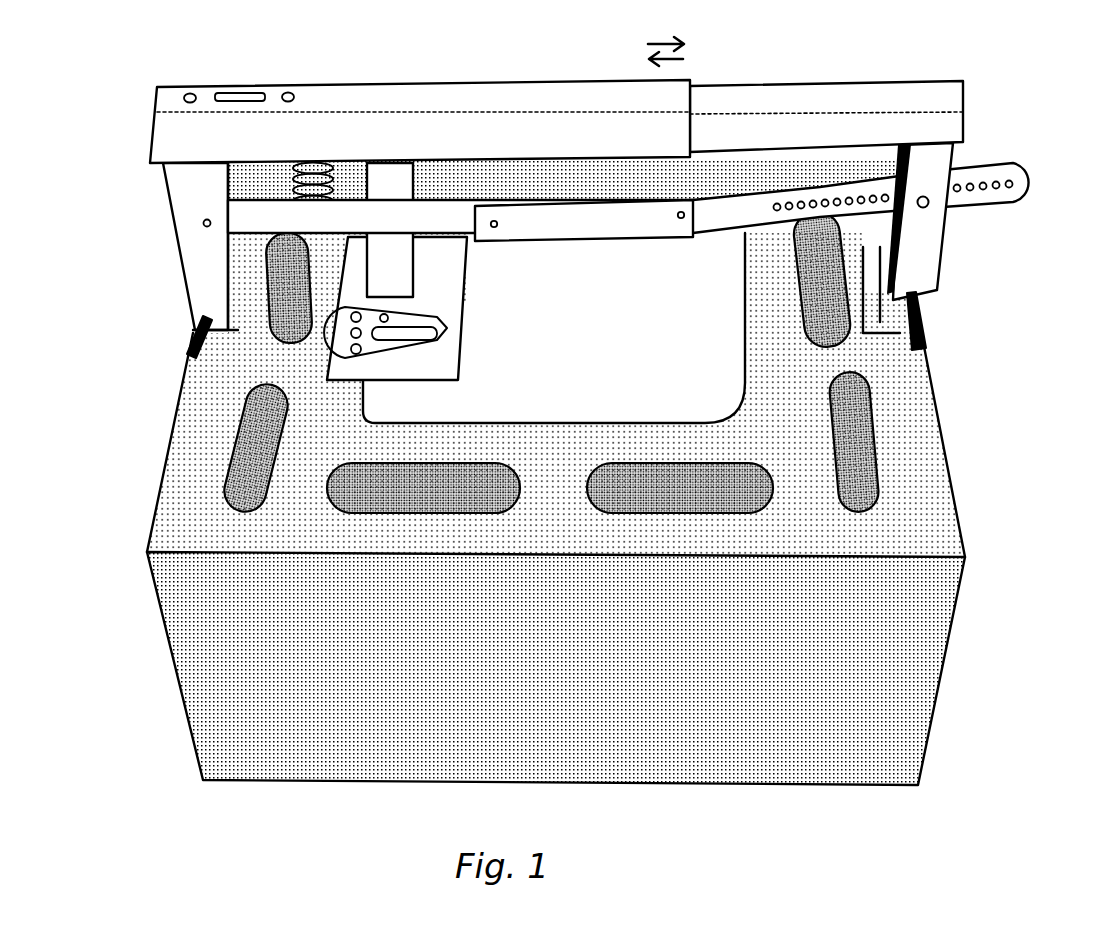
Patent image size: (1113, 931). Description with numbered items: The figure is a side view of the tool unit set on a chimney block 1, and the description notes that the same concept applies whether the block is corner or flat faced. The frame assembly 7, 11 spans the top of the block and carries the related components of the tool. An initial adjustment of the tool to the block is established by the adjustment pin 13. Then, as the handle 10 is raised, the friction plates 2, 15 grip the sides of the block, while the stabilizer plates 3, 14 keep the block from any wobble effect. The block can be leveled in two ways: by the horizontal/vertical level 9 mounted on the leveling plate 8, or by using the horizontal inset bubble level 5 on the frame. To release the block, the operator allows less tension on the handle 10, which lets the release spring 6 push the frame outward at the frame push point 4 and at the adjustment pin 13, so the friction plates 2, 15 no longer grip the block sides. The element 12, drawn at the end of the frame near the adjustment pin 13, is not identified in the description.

The chimney block 1 is at (233, 667).
The friction plate 2 is at (182, 356).
The stabilizer plate 3 is at (227, 320).
The frame push point 4 is at (196, 219).
The horizontal inset bubble level 5 is at (223, 93).
The release spring 6 is at (323, 150).
The frame assembly 7 is at (593, 97).
The leveling plate 8 is at (418, 262).
The horizontal/vertical level 9 is at (440, 300).
The handle 10 is at (623, 243).
The frame assembly 11 is at (700, 77).
The adjustment strap 12 is at (990, 167).
The adjustment pin 13 is at (935, 218).
The stabilizer plate 14 is at (887, 310).
The friction plate 15 is at (927, 347).